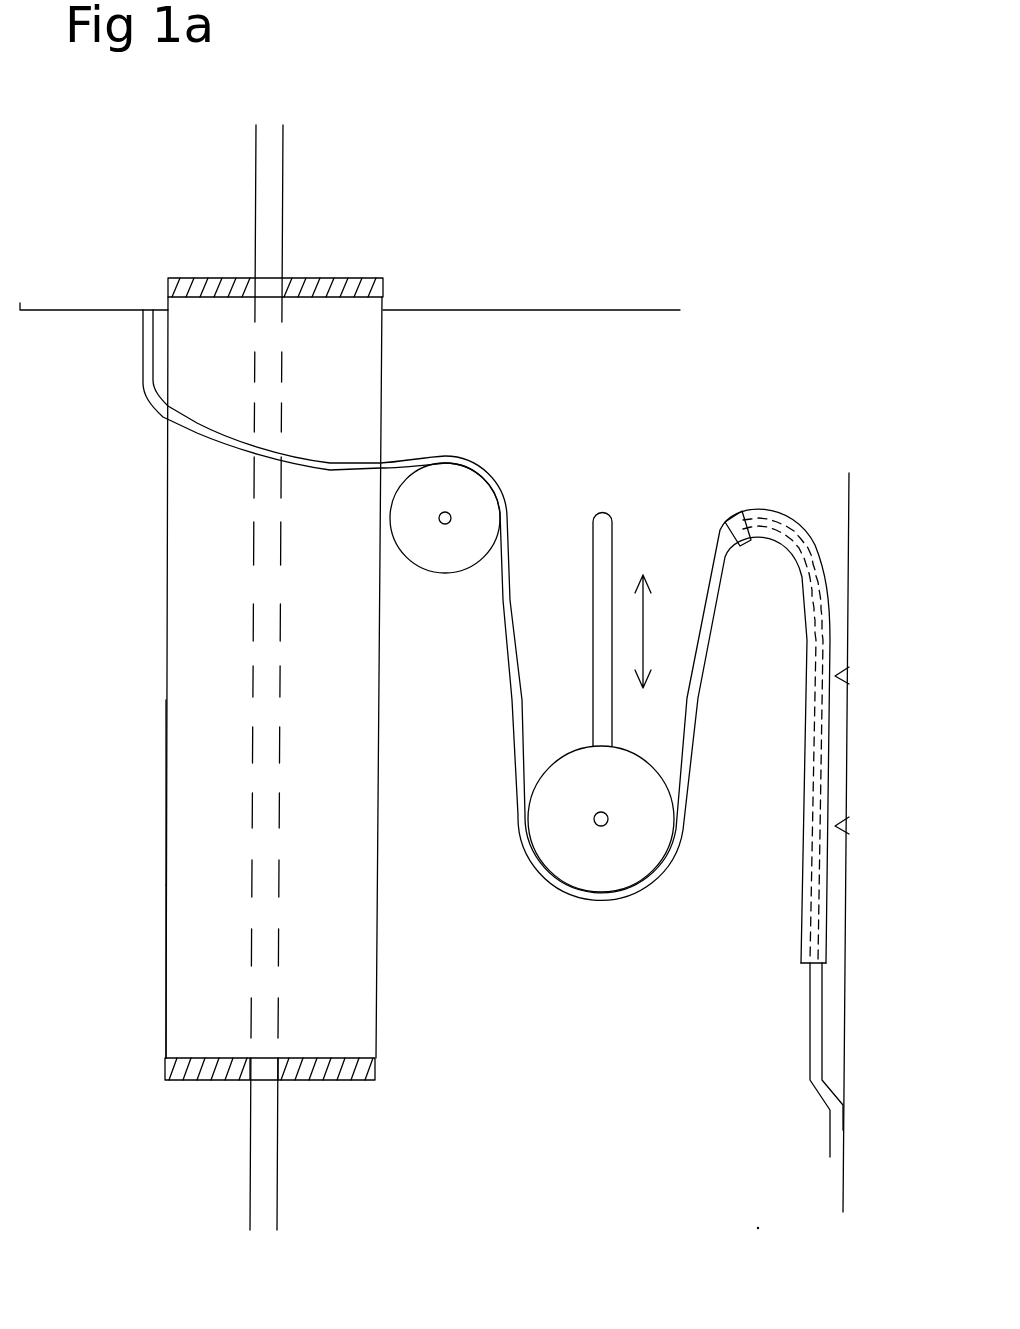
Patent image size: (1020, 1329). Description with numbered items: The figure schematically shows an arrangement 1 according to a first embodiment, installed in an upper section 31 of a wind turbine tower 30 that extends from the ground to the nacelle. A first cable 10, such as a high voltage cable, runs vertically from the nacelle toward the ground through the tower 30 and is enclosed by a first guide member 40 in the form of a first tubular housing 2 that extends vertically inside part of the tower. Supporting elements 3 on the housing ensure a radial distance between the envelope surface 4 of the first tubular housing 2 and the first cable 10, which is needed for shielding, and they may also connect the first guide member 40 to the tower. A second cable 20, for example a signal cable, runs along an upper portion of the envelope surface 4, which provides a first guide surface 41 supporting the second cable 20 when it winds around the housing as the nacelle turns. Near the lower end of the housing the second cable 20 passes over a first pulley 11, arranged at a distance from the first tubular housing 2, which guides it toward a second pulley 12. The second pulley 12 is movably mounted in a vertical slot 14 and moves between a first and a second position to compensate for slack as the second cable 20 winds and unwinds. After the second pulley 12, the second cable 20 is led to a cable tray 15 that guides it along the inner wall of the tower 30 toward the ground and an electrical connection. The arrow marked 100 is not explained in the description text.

The arrangement 1 is at (143, 525).
The first tubular housing 2 is at (226, 677).
The supporting elements 3 is at (468, 1163).
The envelope surface 4 is at (118, 971).
The first cable 10 is at (369, 668).
The first pulley 11 is at (445, 586).
The second pulley 12 is at (589, 897).
The vertical slot 14 is at (660, 580).
The cable tray 15 is at (813, 786).
The second cable 20 is at (486, 636).
The wind turbine tower 30 is at (845, 1040).
The upper section 31 is at (350, 251).
The first guide member 40 is at (91, 656).
The first guide surface 41 is at (107, 806).
The cable guide 100 is at (466, 824).